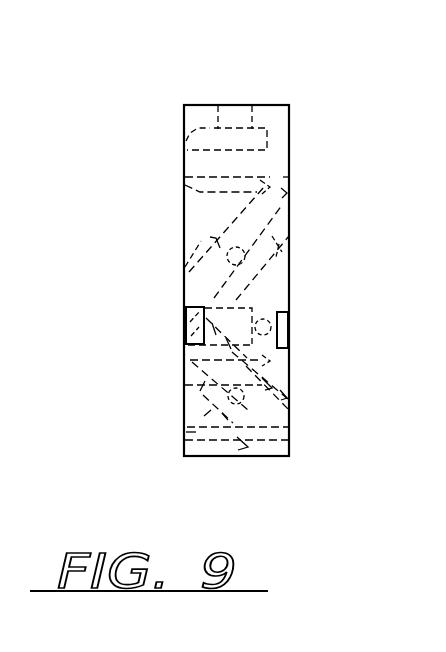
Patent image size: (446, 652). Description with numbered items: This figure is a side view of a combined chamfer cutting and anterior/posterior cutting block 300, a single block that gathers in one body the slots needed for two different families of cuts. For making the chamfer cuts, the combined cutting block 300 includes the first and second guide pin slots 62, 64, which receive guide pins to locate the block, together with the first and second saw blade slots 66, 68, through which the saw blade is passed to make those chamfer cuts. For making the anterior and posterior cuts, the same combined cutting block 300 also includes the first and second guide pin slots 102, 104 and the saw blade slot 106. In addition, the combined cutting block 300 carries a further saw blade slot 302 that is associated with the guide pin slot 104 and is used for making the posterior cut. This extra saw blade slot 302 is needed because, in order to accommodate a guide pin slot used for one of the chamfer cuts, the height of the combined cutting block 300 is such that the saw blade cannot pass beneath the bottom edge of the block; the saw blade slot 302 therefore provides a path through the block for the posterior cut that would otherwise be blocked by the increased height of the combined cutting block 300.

The combined chamfer cutting and anterior/posterior cutting block 300 is at (188, 105).
The first guide pin slot 102 is at (184, 145).
The saw blade slot 106 is at (184, 186).
The first guide pin slot 62 is at (184, 271).
The first saw blade slot 66 is at (290, 240).
The second guide pin slot 104 is at (184, 368).
The second saw blade slot 68 is at (288, 406).
The saw blade slot 302 is at (184, 436).
The second guide pin slot 64 is at (262, 458).